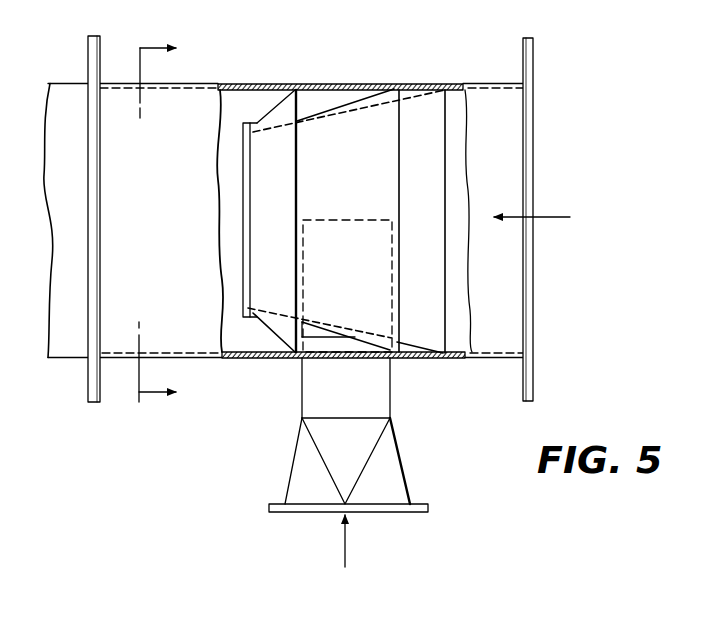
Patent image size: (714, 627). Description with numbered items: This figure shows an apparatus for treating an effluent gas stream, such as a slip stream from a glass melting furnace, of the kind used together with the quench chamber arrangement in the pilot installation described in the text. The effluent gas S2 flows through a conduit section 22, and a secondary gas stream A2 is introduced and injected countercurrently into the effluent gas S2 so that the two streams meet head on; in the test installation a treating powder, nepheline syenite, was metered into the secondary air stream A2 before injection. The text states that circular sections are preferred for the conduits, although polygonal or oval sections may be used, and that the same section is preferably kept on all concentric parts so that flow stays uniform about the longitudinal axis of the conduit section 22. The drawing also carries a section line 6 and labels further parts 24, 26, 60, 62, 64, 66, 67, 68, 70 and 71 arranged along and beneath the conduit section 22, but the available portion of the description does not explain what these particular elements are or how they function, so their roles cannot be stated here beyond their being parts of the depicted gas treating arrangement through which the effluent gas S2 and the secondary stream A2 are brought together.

The conduit section 22 is at (262, 361).
The downstream support post 24 is at (533, 63).
The upstream support post 26 is at (88, 62).
The section line 6- 6 is at (165, 222).
The duct housing 60 is at (422, 93).
The flange 62 is at (243, 221).
The baffle plate 64 is at (350, 103).
The hinge connection 66 is at (275, 104).
The upper chamber 67 is at (326, 97).
The lower baffle 68 is at (247, 307).
The outlet duct / support stand 70 is at (385, 393).
The base plate 71 is at (405, 513).
The effluent gas stream S2 is at (547, 220).
The secondary gas stream A2 is at (345, 556).